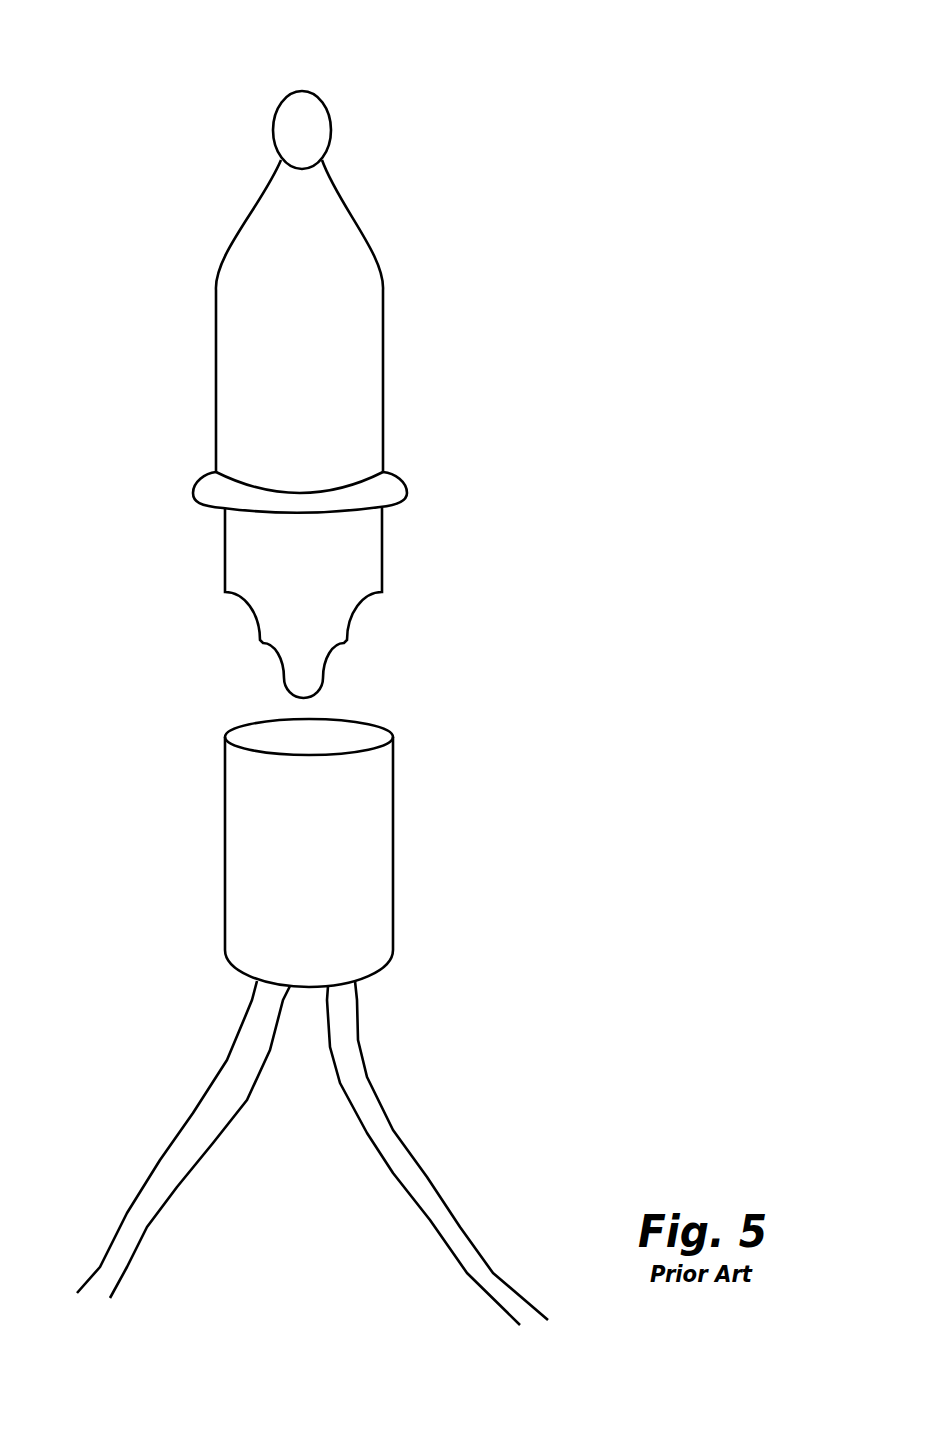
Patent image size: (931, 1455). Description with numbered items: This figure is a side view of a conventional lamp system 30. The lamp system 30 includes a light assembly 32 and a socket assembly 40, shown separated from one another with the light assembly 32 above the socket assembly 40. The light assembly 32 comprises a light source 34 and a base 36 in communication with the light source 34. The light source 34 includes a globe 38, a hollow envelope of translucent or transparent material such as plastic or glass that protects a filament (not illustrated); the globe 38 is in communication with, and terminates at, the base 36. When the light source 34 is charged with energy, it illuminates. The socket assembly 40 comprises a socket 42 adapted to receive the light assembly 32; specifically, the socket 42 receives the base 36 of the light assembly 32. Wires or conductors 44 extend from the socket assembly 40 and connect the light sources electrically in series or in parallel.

The lamp system 30 is at (366, 57).
The light assembly 32 is at (318, 204).
The light source 34 is at (313, 268).
The base 36 is at (382, 545).
The globe 38 is at (230, 393).
The socket assembly 40 is at (394, 763).
The socket 42 is at (373, 800).
The wires or conductors 44 is at (245, 1017).